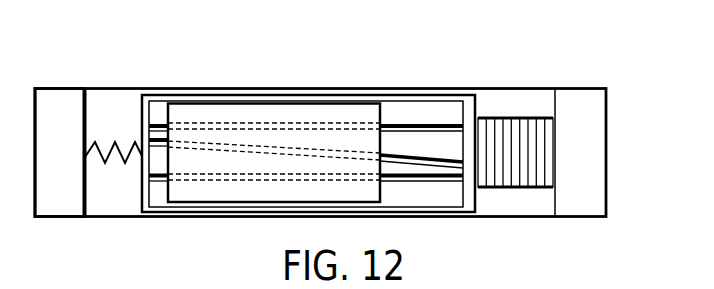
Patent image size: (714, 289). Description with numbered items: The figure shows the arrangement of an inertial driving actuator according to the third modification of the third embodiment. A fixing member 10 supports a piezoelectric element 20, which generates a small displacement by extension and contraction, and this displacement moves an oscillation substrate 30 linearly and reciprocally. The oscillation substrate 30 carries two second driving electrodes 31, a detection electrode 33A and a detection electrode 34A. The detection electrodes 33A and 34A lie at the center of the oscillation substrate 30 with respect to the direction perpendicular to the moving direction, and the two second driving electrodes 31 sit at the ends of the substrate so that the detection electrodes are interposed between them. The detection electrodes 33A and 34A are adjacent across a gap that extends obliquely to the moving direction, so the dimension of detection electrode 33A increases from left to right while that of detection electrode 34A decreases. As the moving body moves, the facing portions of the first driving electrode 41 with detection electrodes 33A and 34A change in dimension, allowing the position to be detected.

The fixing member 10 is at (58, 103).
The piezoelectric element 20 is at (530, 152).
The oscillation substrate 30 is at (468, 100).
The second driving electrodes 31 is at (448, 185).
The detection electrode 33A is at (393, 145).
The detection electrode 34A is at (161, 153).
The first driving electrode 41 is at (238, 102).